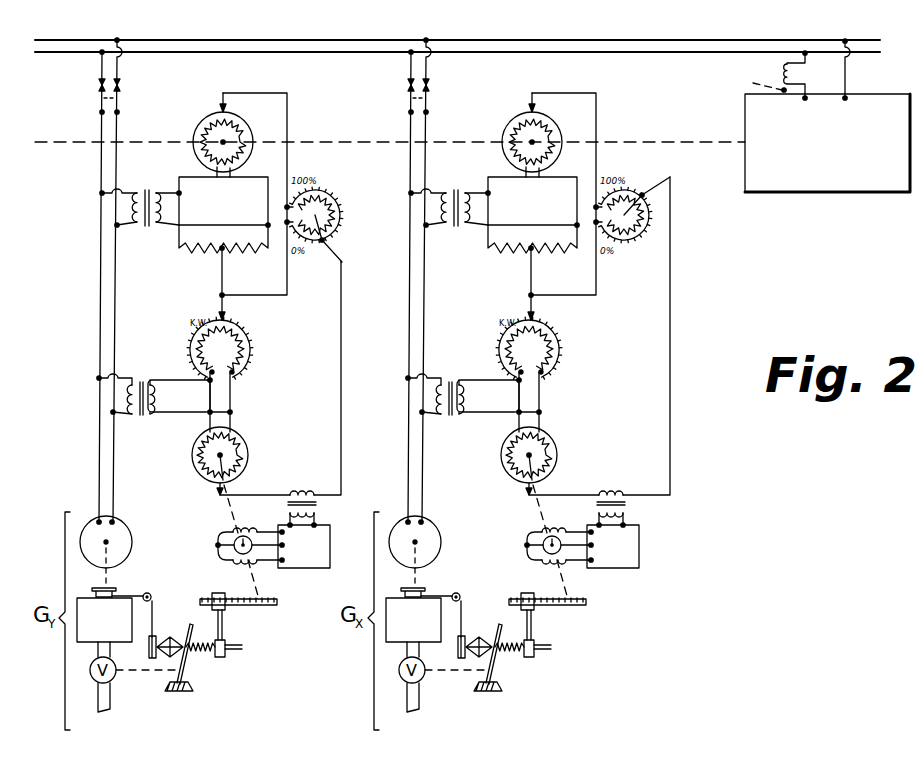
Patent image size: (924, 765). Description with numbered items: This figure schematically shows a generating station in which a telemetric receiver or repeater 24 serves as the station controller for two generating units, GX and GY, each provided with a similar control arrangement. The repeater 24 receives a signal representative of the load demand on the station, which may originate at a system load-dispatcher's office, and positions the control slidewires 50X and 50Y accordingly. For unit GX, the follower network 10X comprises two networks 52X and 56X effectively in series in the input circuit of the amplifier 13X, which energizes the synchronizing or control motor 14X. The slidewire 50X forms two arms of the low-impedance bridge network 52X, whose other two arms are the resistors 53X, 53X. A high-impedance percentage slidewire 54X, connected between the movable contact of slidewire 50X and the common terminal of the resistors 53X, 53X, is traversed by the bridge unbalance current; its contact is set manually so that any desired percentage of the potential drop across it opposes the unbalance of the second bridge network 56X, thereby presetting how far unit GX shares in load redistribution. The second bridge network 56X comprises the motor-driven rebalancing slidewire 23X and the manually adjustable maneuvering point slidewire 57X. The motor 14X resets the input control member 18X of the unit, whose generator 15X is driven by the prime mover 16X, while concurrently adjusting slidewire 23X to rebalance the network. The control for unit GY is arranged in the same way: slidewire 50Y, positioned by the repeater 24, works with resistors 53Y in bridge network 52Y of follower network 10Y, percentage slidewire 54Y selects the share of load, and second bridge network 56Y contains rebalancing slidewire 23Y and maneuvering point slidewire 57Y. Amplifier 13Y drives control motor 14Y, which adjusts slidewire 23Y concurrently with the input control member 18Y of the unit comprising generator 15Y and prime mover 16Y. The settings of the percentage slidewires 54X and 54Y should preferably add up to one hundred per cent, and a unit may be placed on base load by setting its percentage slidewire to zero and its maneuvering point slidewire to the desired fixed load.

The control slidewire 50Y is at (230, 127).
The bridge network 52Y is at (239, 216).
The resistors 53Y is at (260, 243).
The percentage slidewire 54Y is at (327, 200).
The maneuvering point slidewire 57Y is at (242, 335).
The follower network 10Y is at (310, 373).
The second bridge network 56Y is at (195, 408).
The rebalancing slidewire 23Y is at (247, 445).
The generator 15Y is at (123, 530).
The prime mover 16Y is at (104, 620).
The control motor 14Y is at (205, 557).
The amplifier 13Y is at (314, 560).
The input control member 18Y is at (220, 658).
The control slidewire 50X is at (548, 135).
The bridge network 52X is at (532, 201).
The resistors 53X is at (527, 259).
The percentage slidewire 54X is at (634, 230).
The maneuvering point slidewire 57X is at (552, 346).
The follower network 10X is at (619, 356).
The second bridge network 56X is at (488, 396).
The rebalancing slidewire 23X is at (557, 452).
The generator 15X is at (436, 534).
The prime mover 16X is at (413, 620).
The control motor 14X is at (541, 546).
The amplifier 13X is at (613, 545).
The input control member 18X is at (551, 668).
The telemetric receiver 24 is at (795, 188).